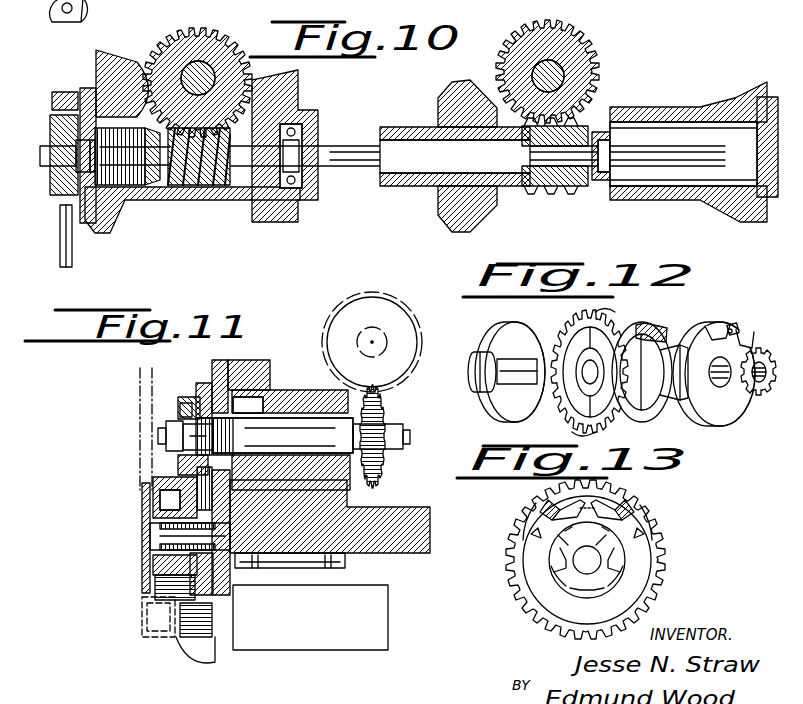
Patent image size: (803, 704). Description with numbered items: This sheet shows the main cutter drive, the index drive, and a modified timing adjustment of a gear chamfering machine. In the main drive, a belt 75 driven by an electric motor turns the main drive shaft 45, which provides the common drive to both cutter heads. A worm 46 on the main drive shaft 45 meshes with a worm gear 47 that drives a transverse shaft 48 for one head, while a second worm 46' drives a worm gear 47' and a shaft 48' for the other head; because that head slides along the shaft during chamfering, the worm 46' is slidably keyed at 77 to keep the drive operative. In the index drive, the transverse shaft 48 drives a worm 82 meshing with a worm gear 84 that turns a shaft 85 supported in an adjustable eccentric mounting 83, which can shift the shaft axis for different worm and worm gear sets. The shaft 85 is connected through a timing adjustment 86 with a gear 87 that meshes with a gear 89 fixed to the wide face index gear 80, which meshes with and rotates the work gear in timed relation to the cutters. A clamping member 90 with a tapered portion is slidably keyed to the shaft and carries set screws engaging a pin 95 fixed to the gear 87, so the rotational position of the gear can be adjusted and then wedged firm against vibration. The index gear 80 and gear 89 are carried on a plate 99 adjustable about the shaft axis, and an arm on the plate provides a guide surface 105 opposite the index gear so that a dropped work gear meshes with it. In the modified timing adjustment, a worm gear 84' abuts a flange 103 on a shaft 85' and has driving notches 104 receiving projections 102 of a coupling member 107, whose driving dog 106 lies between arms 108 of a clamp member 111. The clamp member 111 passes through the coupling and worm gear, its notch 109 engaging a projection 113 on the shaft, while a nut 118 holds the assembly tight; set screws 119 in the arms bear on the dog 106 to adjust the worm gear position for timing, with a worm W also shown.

In FIG. 10, the main drive shaft 45 is at (332, 146).
In FIG. 10, the worm 46 is at (199, 176).
In FIG. 10, the worm 46' is at (555, 165).
In FIG. 10, the worm gear 47 is at (197, 76).
In FIG. 10, the worm gear 47' is at (547, 68).
In FIG. 10, the transverse shaft 48 is at (173, 68).
In FIG. 11, the transverse shaft 48 is at (343, 337).
In FIG. 10, the shaft 48' is at (524, 66).
In FIG. 10, the belt 75 is at (62, 228).
In FIG. 10, the sliding key 77 is at (595, 132).
In FIG. 11, the index gear 80 is at (165, 486).
In FIG. 11, the worm 82 is at (412, 330).
In FIG. 11, the eccentric mounting 83 is at (318, 390).
In FIG. 11, the worm gear 84 is at (393, 436).
In FIG. 12, the worm gear 84' is at (589, 364).
In FIG. 13, the worm gear 84' is at (603, 559).
In FIG. 11, the shaft 85 is at (311, 435).
In FIG. 12, the shaft 85' is at (482, 349).
In FIG. 11, the timing adjustment 86 is at (165, 408).
In FIG. 11, the gear 87 is at (206, 383).
In FIG. 11, the gear 89 is at (212, 590).
In FIG. 11, the clamping member 90 is at (181, 465).
In FIG. 11, the pin 95 is at (186, 403).
In FIG. 11, the plate 99 is at (222, 360).
In FIG. 12, the projections 102 is at (650, 425).
In FIG. 12, the flange 103 is at (512, 418).
In FIG. 12, the driving notches 104 is at (615, 316).
In FIG. 11, the guide surface 105 is at (142, 620).
In FIG. 12, the driving dog 106 is at (660, 328).
In FIG. 13, the driving dog 106 is at (565, 500).
In FIG. 12, the coupling member 107 is at (665, 404).
In FIG. 13, the coupling member 107 is at (620, 505).
In FIG. 12, the arms 108 is at (708, 325).
In FIG. 13, the arms 108 is at (638, 508).
In FIG. 12, the notch 109 is at (642, 372).
In FIG. 12, the clamp member 111 is at (718, 408).
In FIG. 13, the clamp member 111 is at (640, 585).
In FIG. 12, the projection 113 is at (525, 360).
In FIG. 12, the nut 118 is at (754, 392).
In FIG. 13, the nut 118 is at (570, 575).
In FIG. 13, the set screws 119 is at (536, 508).
In FIG. 11, the worm W is at (212, 612).